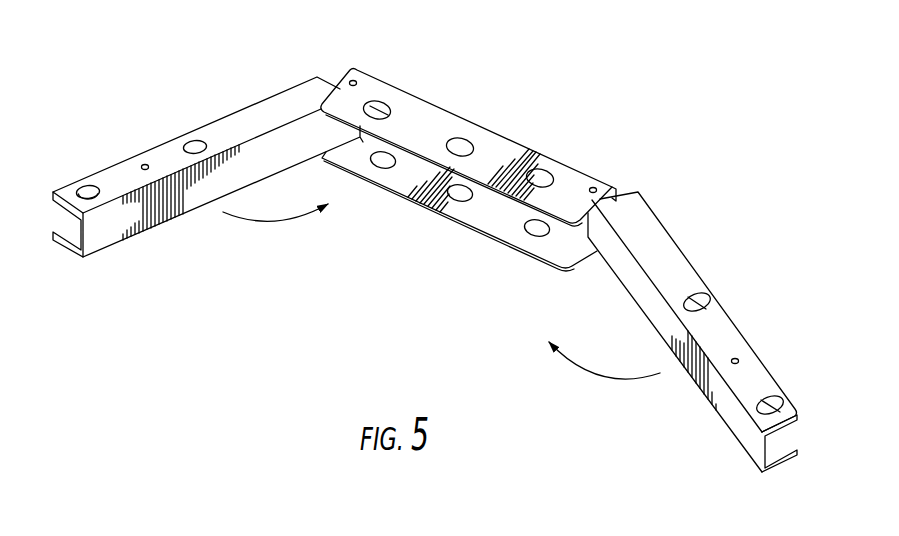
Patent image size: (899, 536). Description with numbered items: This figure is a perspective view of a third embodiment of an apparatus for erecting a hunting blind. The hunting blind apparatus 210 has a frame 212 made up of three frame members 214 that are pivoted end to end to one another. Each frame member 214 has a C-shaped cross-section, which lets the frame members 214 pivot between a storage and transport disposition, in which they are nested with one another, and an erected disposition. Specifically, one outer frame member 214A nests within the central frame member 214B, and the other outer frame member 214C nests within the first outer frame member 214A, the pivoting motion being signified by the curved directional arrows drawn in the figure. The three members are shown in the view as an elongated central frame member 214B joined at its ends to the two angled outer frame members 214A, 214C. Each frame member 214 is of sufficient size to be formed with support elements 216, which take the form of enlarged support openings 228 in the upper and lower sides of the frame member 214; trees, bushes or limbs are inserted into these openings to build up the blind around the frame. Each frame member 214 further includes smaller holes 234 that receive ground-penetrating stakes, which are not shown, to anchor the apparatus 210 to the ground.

The hunting blind apparatus 210 is at (369, 274).
The frame 212 is at (495, 240).
The frame member 214 is at (160, 144).
The first outer frame member 214A is at (708, 395).
The central frame member 214B is at (521, 163).
The other outer frame member 214C is at (163, 207).
The support element 216 is at (78, 191).
The enlarged support opening 228 is at (88, 197).
The hole 234 is at (140, 166).